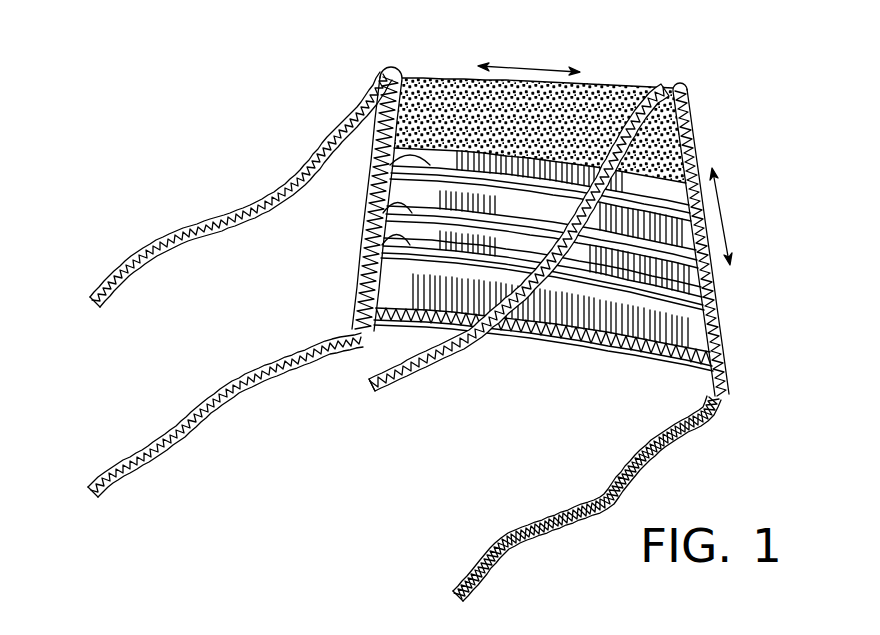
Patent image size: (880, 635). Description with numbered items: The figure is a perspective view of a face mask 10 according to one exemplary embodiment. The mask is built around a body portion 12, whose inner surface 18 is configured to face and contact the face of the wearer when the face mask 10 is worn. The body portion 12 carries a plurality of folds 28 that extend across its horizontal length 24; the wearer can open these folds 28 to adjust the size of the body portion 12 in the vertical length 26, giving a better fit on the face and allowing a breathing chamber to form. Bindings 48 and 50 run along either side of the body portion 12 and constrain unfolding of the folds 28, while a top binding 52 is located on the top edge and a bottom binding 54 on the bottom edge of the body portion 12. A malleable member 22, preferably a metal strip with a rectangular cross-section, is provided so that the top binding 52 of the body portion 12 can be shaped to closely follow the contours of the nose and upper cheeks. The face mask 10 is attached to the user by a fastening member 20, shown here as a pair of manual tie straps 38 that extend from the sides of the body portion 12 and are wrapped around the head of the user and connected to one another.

The face mask 10 is at (234, 112).
The body portion 12 is at (640, 292).
The inner surface 18 is at (395, 288).
The fastening member 20 is at (93, 281).
The malleable member 22 is at (437, 106).
The horizontal length 24 is at (522, 65).
The vertical length 26 is at (723, 213).
The folds 28 is at (400, 170).
The manual tie straps 38 is at (113, 288).
The binding 48 is at (362, 267).
The binding 50 is at (688, 142).
The top binding 52 is at (601, 97).
The binding 54 is at (657, 350).